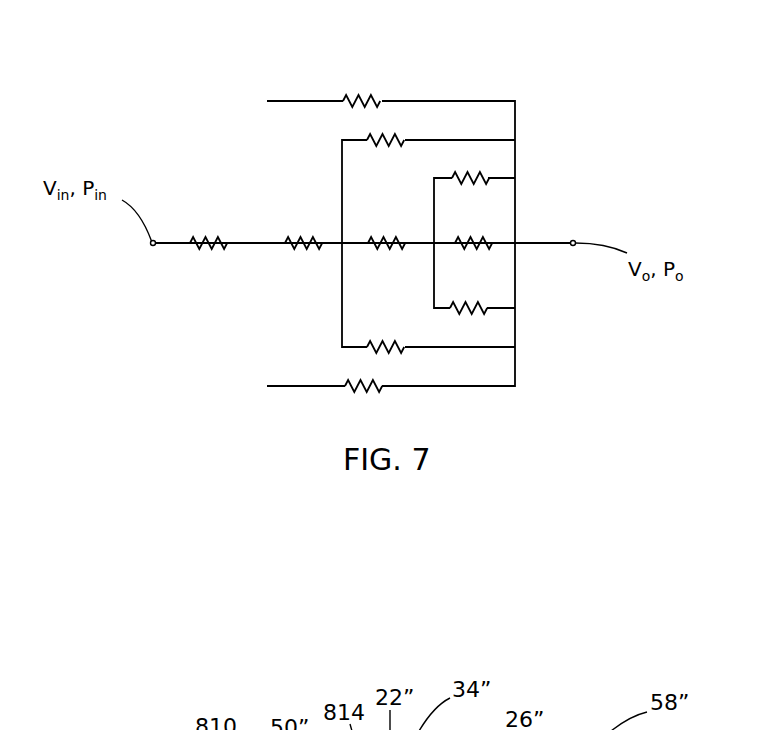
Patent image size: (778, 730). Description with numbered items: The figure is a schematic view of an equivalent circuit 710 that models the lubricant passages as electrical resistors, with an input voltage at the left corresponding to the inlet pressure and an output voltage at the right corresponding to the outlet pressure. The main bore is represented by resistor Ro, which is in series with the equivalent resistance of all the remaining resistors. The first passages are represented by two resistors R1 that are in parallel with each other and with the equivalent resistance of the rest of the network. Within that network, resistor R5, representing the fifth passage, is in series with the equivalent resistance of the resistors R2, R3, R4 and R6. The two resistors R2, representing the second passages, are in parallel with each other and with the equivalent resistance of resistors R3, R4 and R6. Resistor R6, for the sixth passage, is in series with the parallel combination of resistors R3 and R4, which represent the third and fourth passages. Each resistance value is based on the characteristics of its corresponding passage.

The equivalent circuit 710 is at (285, 84).
The resistor R1 is at (379, 100).
The resistor R2 is at (388, 137).
The resistor R3 is at (474, 173).
The resistor R4 is at (477, 239).
The resistor R5 is at (298, 240).
The resistor R6 is at (401, 241).
The resistor R0 Ro is at (217, 238).